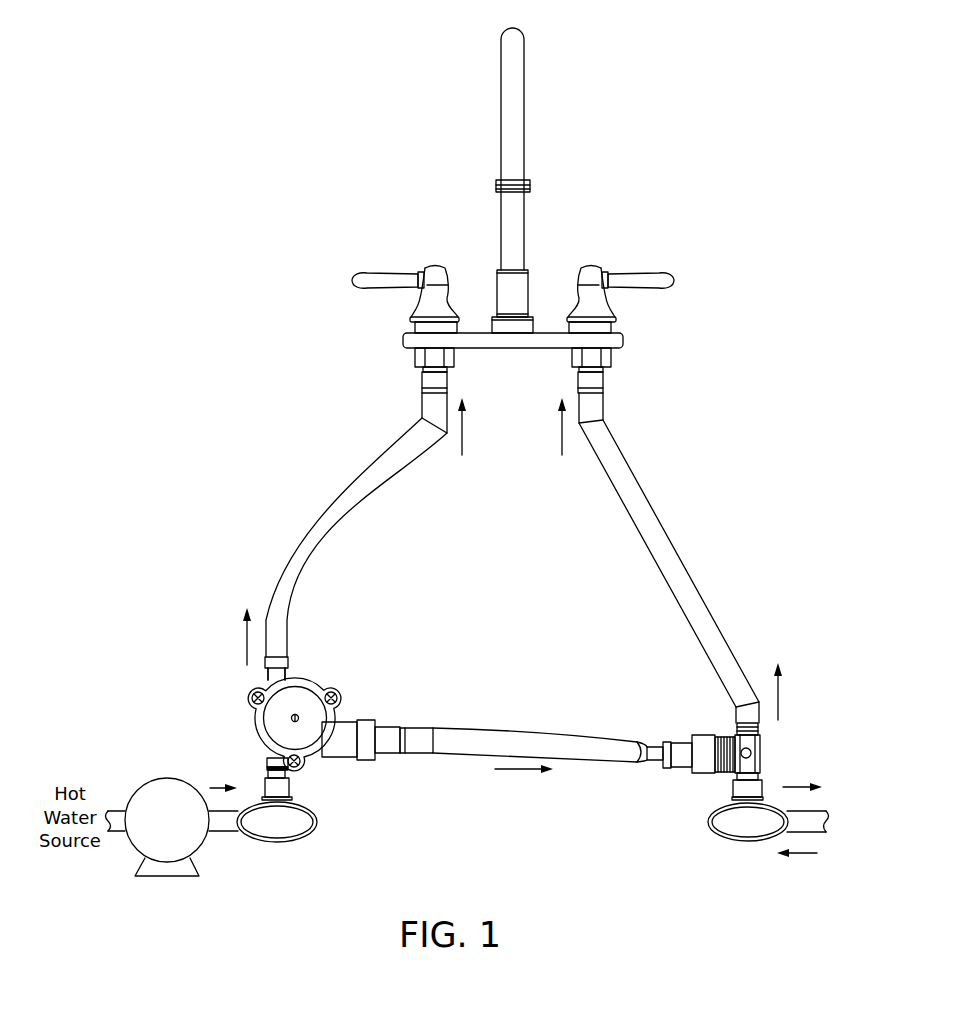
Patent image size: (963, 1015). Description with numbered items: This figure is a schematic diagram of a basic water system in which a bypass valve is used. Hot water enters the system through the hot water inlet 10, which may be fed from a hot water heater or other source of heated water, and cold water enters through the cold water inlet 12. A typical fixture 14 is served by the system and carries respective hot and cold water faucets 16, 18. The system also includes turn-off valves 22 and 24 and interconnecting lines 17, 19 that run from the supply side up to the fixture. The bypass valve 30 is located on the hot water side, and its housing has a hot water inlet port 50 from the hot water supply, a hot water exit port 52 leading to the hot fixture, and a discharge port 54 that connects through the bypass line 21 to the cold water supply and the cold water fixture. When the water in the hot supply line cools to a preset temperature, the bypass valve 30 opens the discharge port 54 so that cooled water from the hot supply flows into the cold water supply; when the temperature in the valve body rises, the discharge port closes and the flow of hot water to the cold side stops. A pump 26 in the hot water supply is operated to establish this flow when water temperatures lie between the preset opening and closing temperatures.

The hot water inlet 10 is at (223, 825).
The cold water inlet 12 is at (817, 815).
The fixture 14 is at (557, 265).
The hot water faucet 16 is at (637, 279).
The interconnecting line 17 is at (647, 527).
The cold water faucet 18 is at (383, 279).
The interconnecting line 19 is at (330, 512).
The bypass line 21 is at (516, 724).
The turn-off valve 22 is at (712, 822).
The turn-off valve 24 is at (303, 823).
The pump 26 is at (168, 797).
The bypass valve 30 is at (314, 693).
The hot water inlet port 50 is at (278, 788).
The hot water exit port 52 is at (273, 678).
The discharge port 54 is at (343, 729).